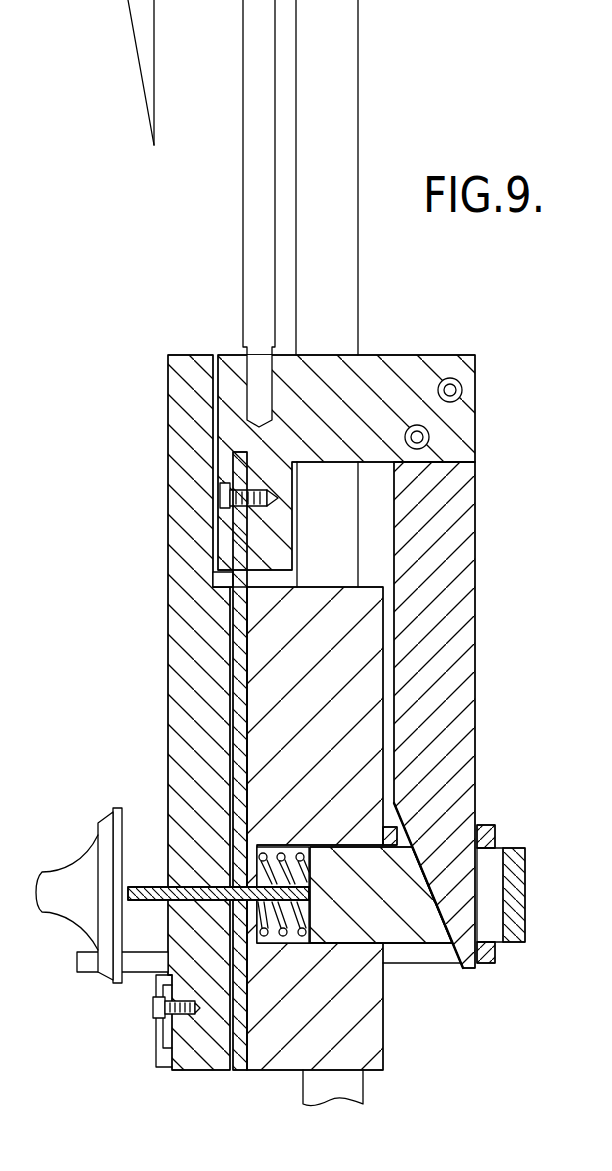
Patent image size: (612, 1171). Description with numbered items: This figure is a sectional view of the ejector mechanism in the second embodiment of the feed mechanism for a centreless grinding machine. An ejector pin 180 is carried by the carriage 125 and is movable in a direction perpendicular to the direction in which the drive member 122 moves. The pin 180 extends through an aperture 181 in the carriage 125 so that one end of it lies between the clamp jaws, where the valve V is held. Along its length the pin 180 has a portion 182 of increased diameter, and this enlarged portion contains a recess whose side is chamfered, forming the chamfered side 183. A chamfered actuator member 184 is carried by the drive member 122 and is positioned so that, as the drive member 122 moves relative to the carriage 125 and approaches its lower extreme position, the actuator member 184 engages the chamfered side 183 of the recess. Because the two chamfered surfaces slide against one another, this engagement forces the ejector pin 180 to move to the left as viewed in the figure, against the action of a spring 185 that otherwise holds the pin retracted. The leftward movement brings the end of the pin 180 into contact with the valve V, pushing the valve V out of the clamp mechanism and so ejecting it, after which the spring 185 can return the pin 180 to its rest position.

The drive member 122 is at (168, 641).
The carriage 125 is at (262, 751).
The ejector pin 180 is at (152, 886).
The aperture 181 is at (187, 915).
The portion of increased diameter 182 is at (447, 947).
The chamfered side 183 is at (435, 883).
The chamfered actuator member 184 is at (433, 720).
The spring 185 is at (283, 933).
The valve V is at (70, 863).